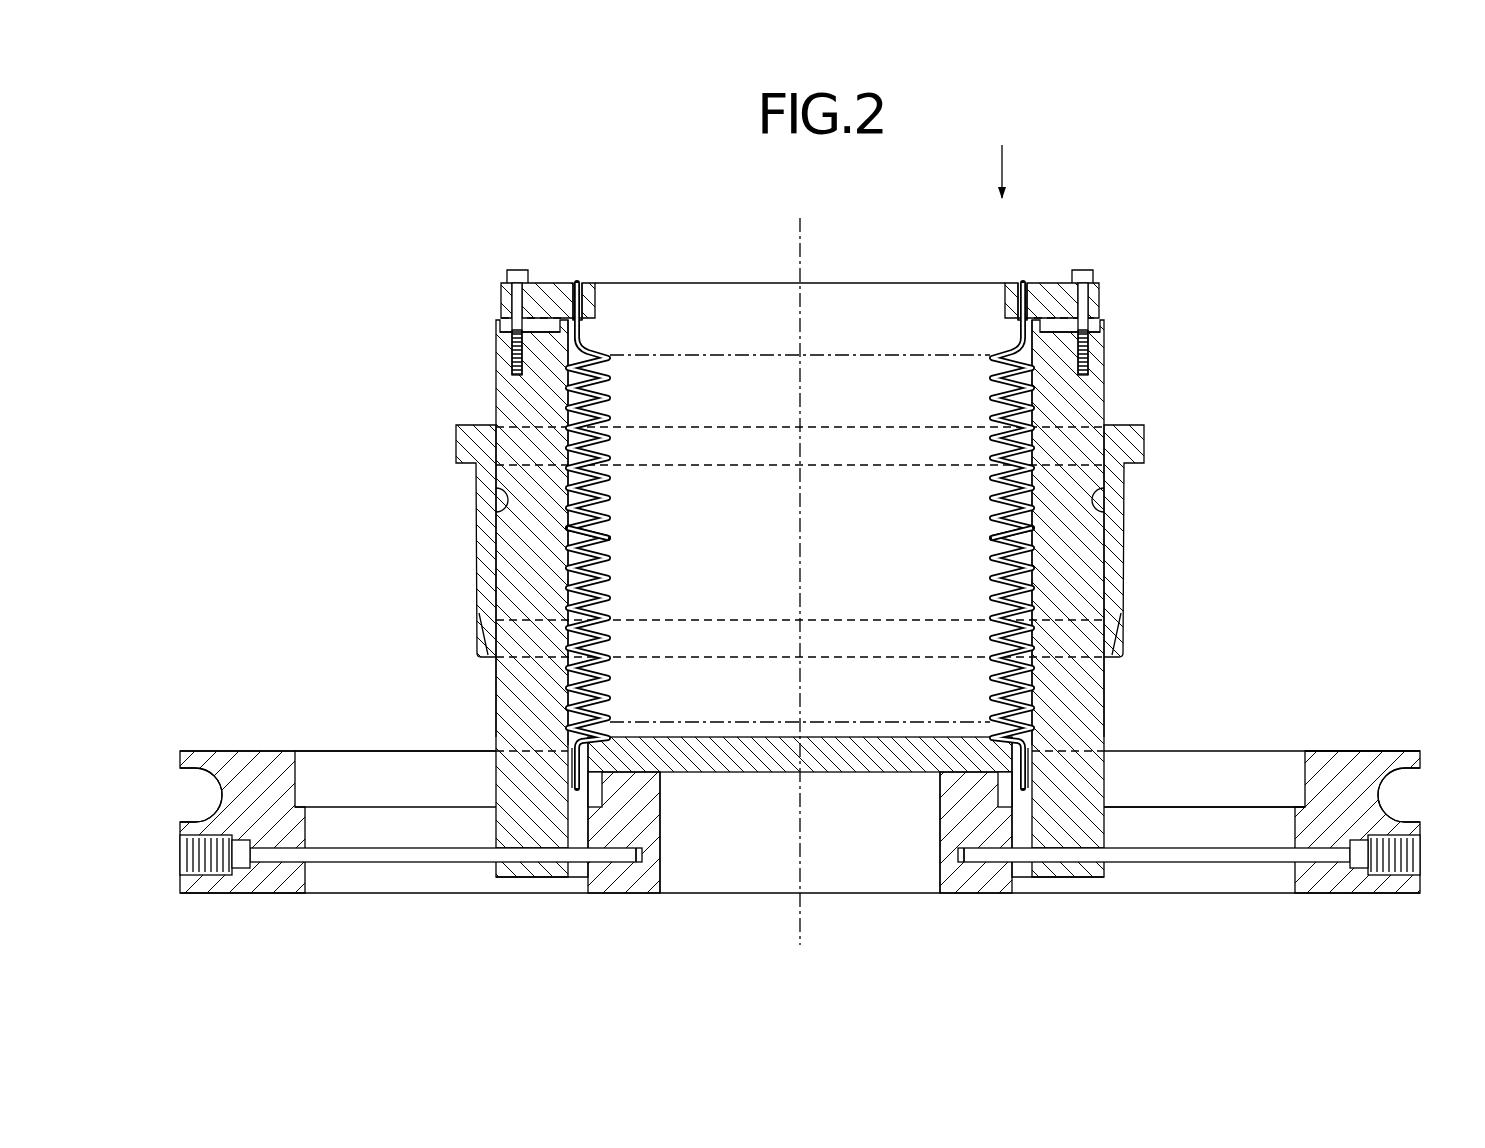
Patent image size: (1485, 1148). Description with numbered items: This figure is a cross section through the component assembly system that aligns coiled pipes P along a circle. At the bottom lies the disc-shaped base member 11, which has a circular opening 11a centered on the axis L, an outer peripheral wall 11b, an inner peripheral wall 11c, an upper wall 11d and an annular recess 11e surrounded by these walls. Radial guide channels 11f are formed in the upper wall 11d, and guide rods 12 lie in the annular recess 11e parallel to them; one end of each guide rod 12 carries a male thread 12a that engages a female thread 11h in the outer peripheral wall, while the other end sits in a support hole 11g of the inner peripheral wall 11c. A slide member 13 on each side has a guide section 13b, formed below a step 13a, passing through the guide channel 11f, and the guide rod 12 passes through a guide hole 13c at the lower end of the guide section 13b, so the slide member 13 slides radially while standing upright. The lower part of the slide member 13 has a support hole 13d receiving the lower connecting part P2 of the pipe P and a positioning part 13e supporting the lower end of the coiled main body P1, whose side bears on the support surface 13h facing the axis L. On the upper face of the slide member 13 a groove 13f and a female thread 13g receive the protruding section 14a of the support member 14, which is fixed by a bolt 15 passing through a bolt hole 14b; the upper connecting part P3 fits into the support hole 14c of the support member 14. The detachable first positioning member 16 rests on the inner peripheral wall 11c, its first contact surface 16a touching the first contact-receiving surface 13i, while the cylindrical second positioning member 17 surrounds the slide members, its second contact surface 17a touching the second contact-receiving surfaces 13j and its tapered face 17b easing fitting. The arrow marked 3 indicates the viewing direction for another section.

The base member 11 is at (1332, 746).
The circular opening 11a is at (856, 839).
The outer peripheral wall 11b is at (1378, 756).
The inner peripheral wall 11c is at (640, 815).
The upper wall 11d is at (362, 750).
The annular recess 11e is at (1240, 844).
The guide channel 11f is at (310, 750).
The support hole 11g is at (645, 845).
The threaded hole of base 11h is at (207, 840).
The guide rod 12 is at (354, 843).
The male thread 12a is at (225, 876).
The slide member 13 is at (490, 405).
The step 13a is at (535, 757).
The guide section 13b is at (505, 827).
The guide hole 13c is at (520, 860).
The support hole 13d is at (578, 870).
The positioning part 13e is at (598, 745).
The groove 13f is at (498, 326).
The female thread 13g is at (517, 362).
The support surface 13h is at (607, 573).
The first contact-receiving surface 13i is at (602, 750).
The second contact-receiving surface 13j is at (494, 684).
The support member 14 is at (600, 305).
The protruding section 14a is at (508, 325).
The bolt hole 14b is at (520, 300).
The support hole 14c is at (578, 286).
The bolt 15 is at (516, 270).
The first positioning member 16 is at (820, 732).
The first contact surface 16a is at (603, 792).
The second positioning member 17 is at (1150, 452).
The second contact surface 17a is at (500, 510).
The tapered face 17b is at (478, 655).
The pipe P is at (612, 492).
The main body P1 is at (612, 532).
The connecting part P2 is at (566, 735).
The connecting part P3 is at (582, 340).
The axis L is at (805, 248).
The section view direction arrow 3 is at (1019, 171).